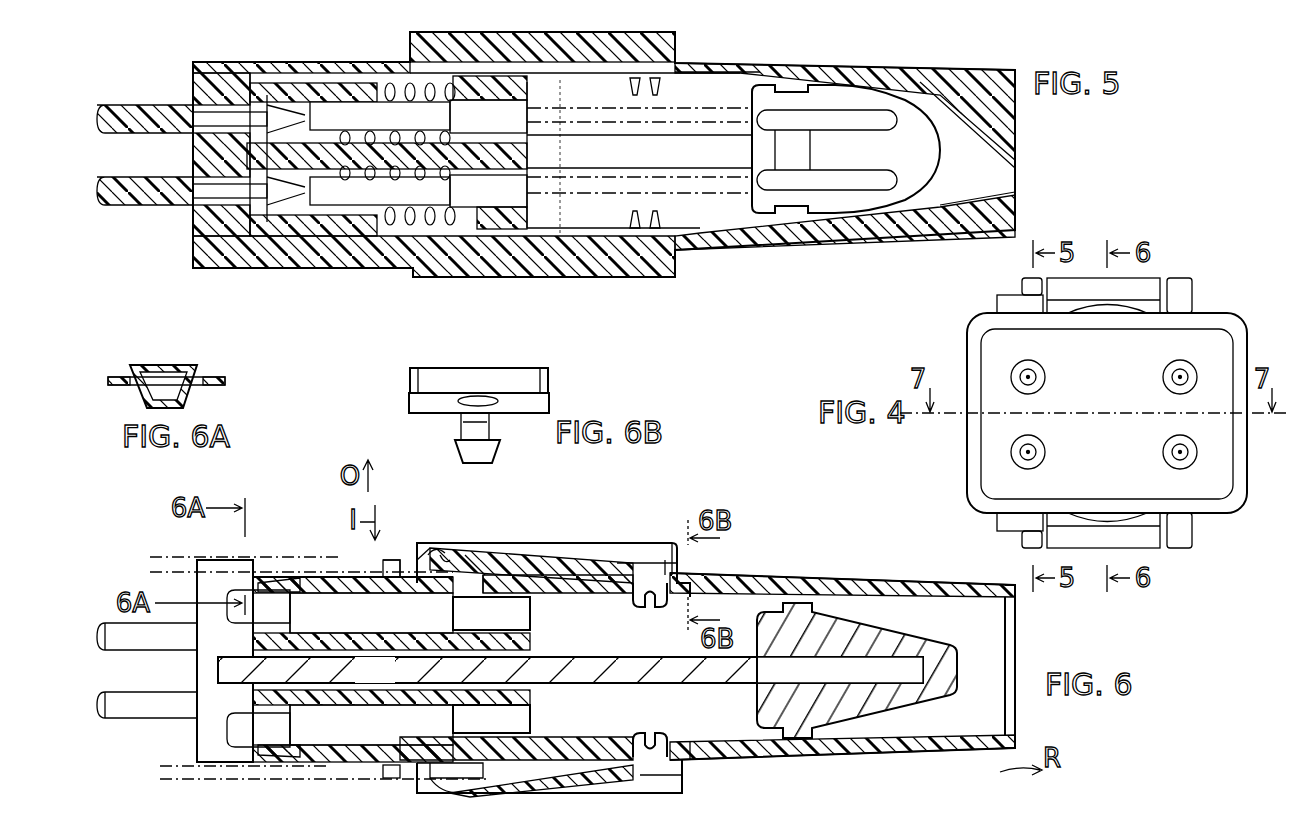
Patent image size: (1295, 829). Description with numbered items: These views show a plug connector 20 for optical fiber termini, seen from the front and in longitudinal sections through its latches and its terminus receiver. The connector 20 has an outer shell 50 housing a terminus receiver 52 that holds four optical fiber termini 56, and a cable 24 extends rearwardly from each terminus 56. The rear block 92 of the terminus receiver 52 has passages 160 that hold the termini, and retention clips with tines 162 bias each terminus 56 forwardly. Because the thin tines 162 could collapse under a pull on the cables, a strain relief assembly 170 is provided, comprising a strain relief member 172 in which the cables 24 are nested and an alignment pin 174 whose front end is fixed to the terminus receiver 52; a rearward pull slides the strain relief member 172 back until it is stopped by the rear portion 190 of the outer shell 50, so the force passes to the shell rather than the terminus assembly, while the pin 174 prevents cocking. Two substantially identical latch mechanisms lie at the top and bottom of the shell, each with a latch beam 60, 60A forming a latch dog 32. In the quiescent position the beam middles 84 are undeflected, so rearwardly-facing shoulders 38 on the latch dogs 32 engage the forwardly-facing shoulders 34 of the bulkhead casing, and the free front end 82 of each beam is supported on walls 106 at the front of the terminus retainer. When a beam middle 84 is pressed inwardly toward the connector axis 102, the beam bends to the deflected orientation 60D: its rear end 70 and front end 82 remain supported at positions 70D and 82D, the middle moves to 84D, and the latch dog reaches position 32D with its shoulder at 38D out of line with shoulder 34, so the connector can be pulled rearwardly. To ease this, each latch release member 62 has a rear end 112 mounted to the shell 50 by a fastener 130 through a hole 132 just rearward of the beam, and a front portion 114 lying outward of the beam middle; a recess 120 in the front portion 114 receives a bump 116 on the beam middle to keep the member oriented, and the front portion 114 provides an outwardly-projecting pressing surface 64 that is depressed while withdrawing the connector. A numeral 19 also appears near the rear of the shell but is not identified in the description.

In FIG. 5, the cable 19 is at (902, 92).
In FIG. 6, the plug connector 20 is at (892, 764).
In FIG. 5, the cable 24 is at (695, 107).
In FIG. 6, the latch dog 32 is at (340, 580).
In FIG. 6, the deflected latch dog position 32D is at (360, 575).
In FIG. 6, the forwardly-facing shoulder 34 is at (387, 560).
In FIG. 6, the rearwardly-facing shoulder 38 is at (392, 778).
In FIG. 6, the deflected latch dog shoulder position 38D is at (570, 668).
In FIG. 4, the outer shell 50 is at (966, 486).
In FIG. 6, the outer shell 50 is at (815, 762).
In FIG. 5, the terminus receiver 52 is at (308, 252).
In FIG. 4, the terminus receiver 52 is at (990, 438).
In FIG. 5, the optical fiber terminus 56 is at (418, 117).
In FIG. 4, the optical fiber terminus 56 is at (1012, 368).
In FIG. 4, the latch beam 60 is at (1147, 307).
In FIG. 6, the latch beam 60 is at (530, 580).
In FIG. 6, the latch beam 60A is at (585, 760).
In FIG. 6, the deflected beam orientation 60D is at (560, 580).
In FIG. 4, the latch release member 62 is at (1142, 300).
In FIG. 6, the latch release member 62 is at (595, 550).
In FIG. 6, the pressing surface 64 is at (450, 793).
In FIG. 6, the beam rear end 70 is at (628, 590).
In FIG. 6, the deflected beam rear end position 70D is at (545, 612).
In FIG. 6A, the beam free front end 82 is at (155, 363).
In FIG. 6, the beam free front end 82 is at (258, 580).
In FIG. 6, the deflected beam front end position 82D is at (290, 578).
In FIG. 6, the beam middle 84 is at (488, 565).
In FIG. 6, the deflected beam middle position 84D is at (510, 565).
In FIG. 5, the rear block 92 is at (498, 220).
In FIG. 6, the connector axis 102 is at (170, 665).
In FIG. 6A, the wall 106 is at (168, 395).
In FIG. 6, the release member rear end 112 is at (680, 560).
In FIG. 6, the release member front portion 114 is at (475, 560).
In FIG. 6, the bump 116 is at (430, 555).
In FIG. 6, the recess 120 is at (440, 560).
In FIG. 6, the fastener 130 is at (670, 603).
In FIG. 6, the hole 132 is at (665, 560).
In FIG. 5, the passage 160 is at (600, 197).
In FIG. 5, the tines 162 is at (290, 222).
In FIG. 5, the strain relief assembly 170 is at (698, 175).
In FIG. 5, the strain relief member 172 is at (767, 208).
In FIG. 6, the strain relief member 172 is at (770, 722).
In FIG. 5, the alignment pin 174 is at (617, 180).
In FIG. 5, the outer shell rear portion 190 is at (923, 240).